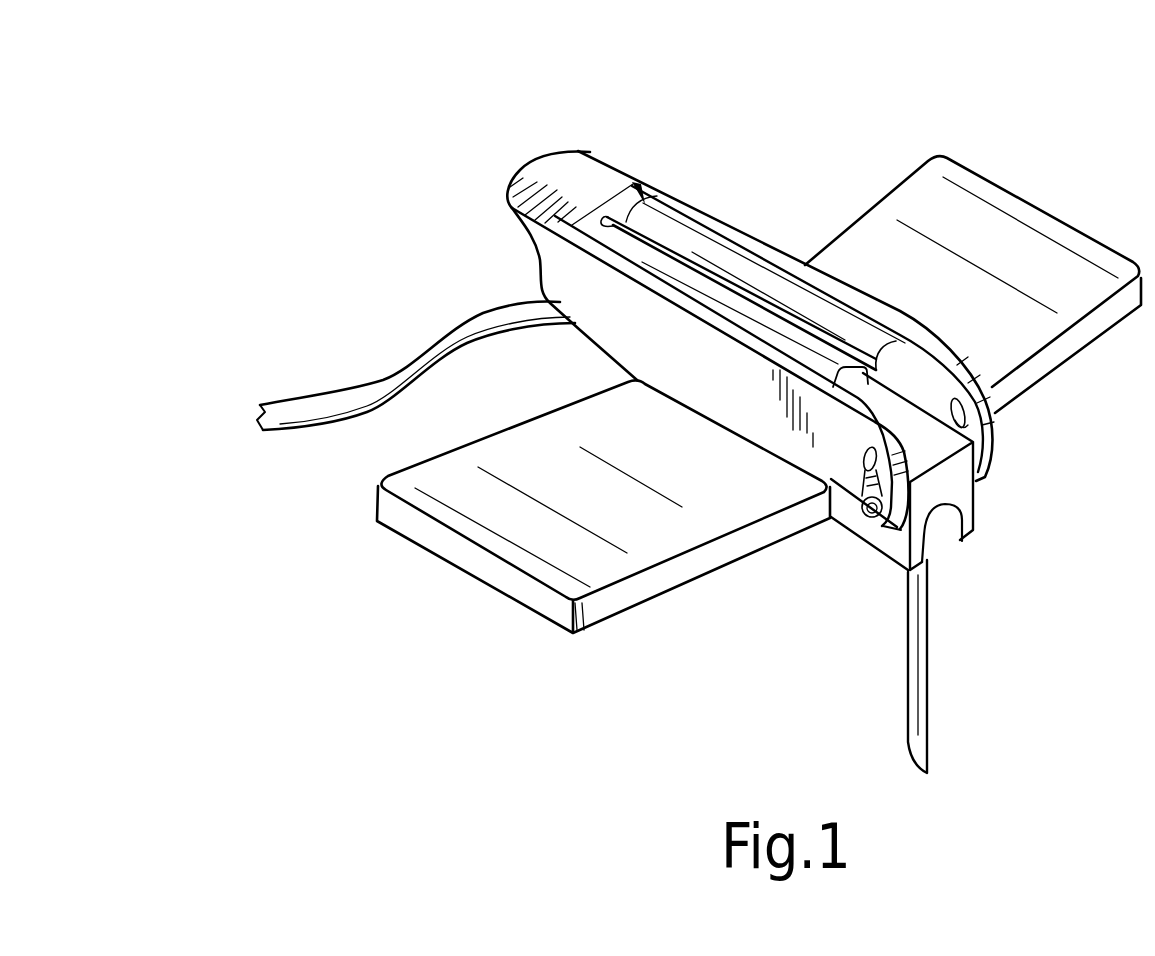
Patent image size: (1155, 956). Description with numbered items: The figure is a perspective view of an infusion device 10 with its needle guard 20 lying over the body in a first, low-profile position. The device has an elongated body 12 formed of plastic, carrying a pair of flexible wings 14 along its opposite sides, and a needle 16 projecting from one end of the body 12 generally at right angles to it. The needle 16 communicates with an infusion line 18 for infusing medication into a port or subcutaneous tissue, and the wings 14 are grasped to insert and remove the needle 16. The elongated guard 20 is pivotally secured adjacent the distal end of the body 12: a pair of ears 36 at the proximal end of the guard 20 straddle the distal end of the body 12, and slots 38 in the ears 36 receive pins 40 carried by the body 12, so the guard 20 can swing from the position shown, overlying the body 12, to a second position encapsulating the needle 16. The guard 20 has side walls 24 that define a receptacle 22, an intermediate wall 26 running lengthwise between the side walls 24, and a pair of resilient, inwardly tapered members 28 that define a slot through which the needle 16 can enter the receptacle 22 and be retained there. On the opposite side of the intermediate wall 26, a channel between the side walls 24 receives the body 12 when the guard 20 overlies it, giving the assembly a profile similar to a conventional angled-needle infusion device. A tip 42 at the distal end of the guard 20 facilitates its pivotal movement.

The infusion device 10 is at (440, 135).
The elongated body 12 is at (927, 450).
The flexible wings 14 is at (607, 572).
The needle 16 is at (913, 663).
The infusion line 18 is at (388, 380).
The guard 20 is at (540, 293).
The receptacle 22 is at (900, 367).
The side walls 24 is at (713, 225).
The intermediate wall 26 is at (865, 393).
The members 28 is at (660, 230).
The ears 36 is at (612, 345).
The slots 38 is at (860, 460).
The pins 40 is at (859, 518).
The tip 42 is at (567, 166).